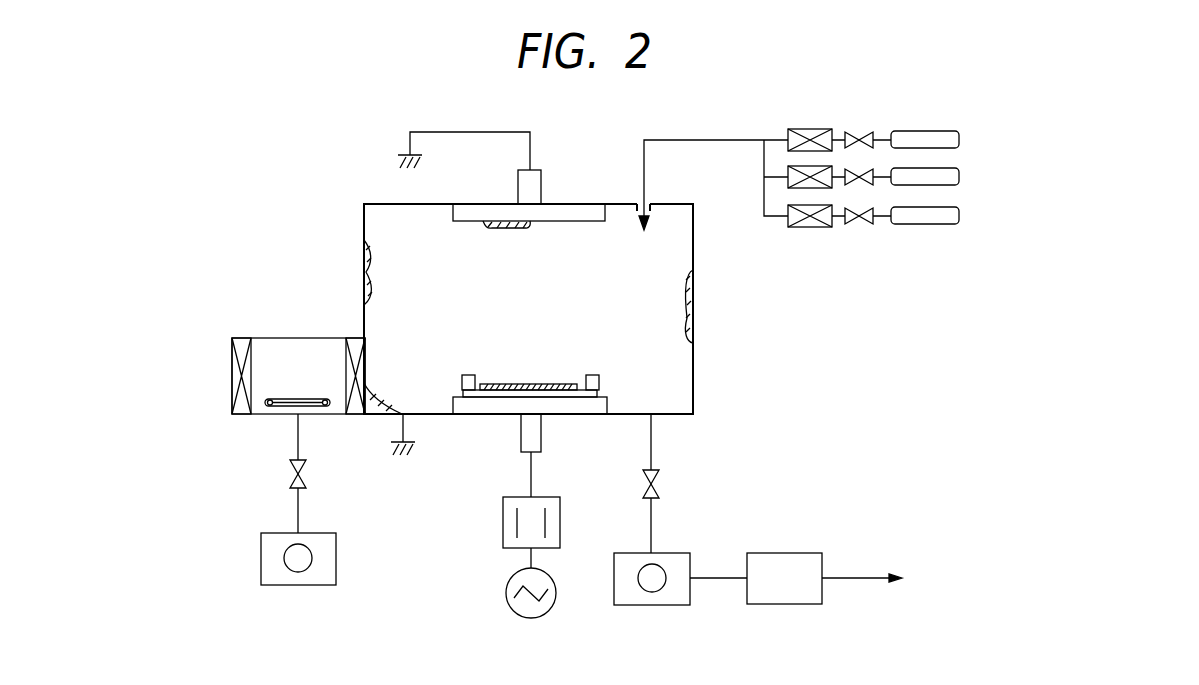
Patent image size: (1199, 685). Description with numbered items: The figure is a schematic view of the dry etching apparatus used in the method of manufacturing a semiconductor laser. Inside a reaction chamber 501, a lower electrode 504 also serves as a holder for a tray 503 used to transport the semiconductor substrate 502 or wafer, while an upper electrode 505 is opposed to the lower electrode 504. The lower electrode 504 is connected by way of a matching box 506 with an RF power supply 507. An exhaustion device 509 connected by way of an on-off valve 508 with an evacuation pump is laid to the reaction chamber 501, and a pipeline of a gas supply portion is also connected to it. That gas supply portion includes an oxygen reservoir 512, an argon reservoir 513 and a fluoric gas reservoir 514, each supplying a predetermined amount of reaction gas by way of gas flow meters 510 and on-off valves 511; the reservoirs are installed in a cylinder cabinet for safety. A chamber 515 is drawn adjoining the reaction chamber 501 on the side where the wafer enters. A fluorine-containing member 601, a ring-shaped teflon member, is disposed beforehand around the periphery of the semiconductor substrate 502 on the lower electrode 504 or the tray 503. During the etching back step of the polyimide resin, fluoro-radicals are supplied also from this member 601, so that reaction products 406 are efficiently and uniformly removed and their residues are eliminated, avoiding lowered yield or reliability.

The reaction products 406 is at (695, 292).
The reaction chamber 501 is at (694, 375).
The semiconductor substrate 502 is at (544, 384).
The tray 503 is at (597, 393).
The lower electrode 504 is at (560, 408).
The upper electrode 505 is at (578, 202).
The matching box 506 is at (503, 512).
The RF power supply 507 is at (508, 607).
The on-off valve 508 is at (290, 472).
The exhaustion device 509 is at (337, 553).
The gas flow meter 510 is at (812, 128).
The on-off valve 511 is at (864, 126).
The oxygen reservoir 512 is at (928, 131).
The argon reservoir 513 is at (959, 177).
The fluoric gas reservoir 514 is at (923, 225).
The load lock chamber 515 is at (288, 338).
The fluorine-containing member 601 is at (465, 375).